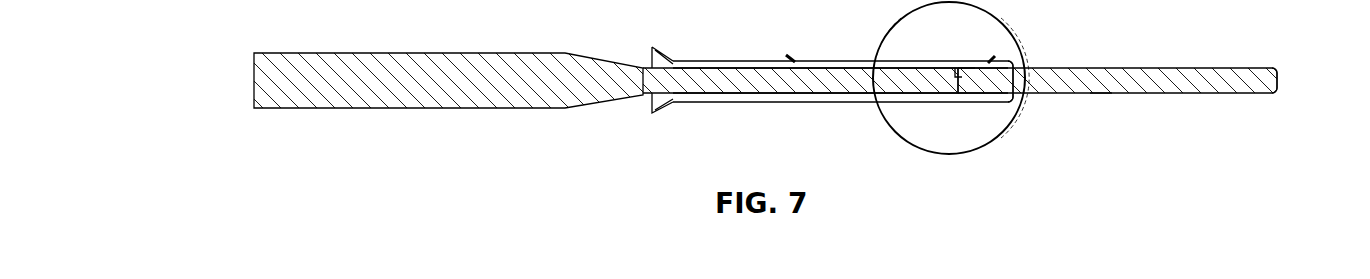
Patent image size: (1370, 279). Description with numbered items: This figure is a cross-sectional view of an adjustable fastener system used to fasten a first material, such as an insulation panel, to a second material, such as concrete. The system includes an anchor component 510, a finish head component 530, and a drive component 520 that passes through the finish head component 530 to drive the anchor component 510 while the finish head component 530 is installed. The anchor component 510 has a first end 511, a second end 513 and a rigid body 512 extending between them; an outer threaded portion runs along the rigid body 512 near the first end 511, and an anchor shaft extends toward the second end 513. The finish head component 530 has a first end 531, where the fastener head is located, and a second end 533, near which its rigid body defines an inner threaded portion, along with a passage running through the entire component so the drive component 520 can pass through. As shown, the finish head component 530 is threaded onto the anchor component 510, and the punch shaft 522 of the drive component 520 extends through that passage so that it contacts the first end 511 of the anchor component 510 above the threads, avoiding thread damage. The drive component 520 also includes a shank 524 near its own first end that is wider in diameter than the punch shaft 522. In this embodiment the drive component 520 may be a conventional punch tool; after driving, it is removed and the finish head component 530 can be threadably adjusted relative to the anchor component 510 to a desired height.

The anchor component 510 is at (1128, 104).
The first end 511 is at (958, 72).
The rigid body 512 is at (1101, 94).
The second end 513 is at (1276, 90).
The drive component 520 is at (610, 119).
The punch shaft 522 is at (966, 90).
The shank 524 is at (325, 100).
The finish head component 530 is at (813, 113).
The first end 531 is at (646, 106).
The second end 533 is at (1014, 94).